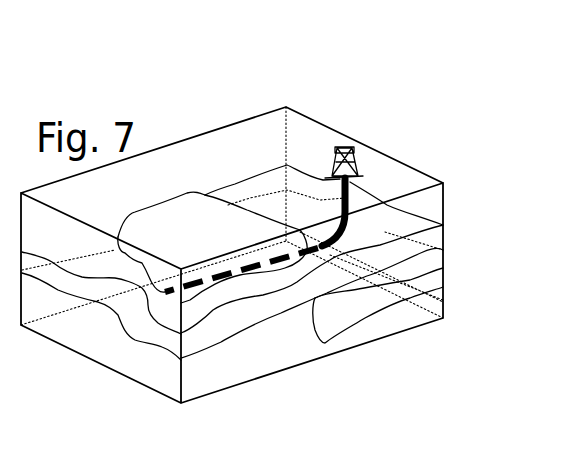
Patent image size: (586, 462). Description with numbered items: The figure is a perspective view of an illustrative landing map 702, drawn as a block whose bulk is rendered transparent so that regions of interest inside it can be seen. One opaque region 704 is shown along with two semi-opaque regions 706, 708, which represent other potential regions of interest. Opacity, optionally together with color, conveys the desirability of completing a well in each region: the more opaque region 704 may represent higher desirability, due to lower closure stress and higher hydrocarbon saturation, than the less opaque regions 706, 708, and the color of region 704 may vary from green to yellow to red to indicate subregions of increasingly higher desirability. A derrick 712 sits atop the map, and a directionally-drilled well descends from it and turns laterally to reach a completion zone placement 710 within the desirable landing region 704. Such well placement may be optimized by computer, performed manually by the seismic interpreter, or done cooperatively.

The landing map 702 is at (425, 167).
The opaque region 704 is at (183, 247).
The semi-opaque region 706 is at (107, 300).
The semi-opaque region 708 is at (348, 323).
The completion zone placement 710 is at (231, 267).
The derrick 712 is at (353, 148).